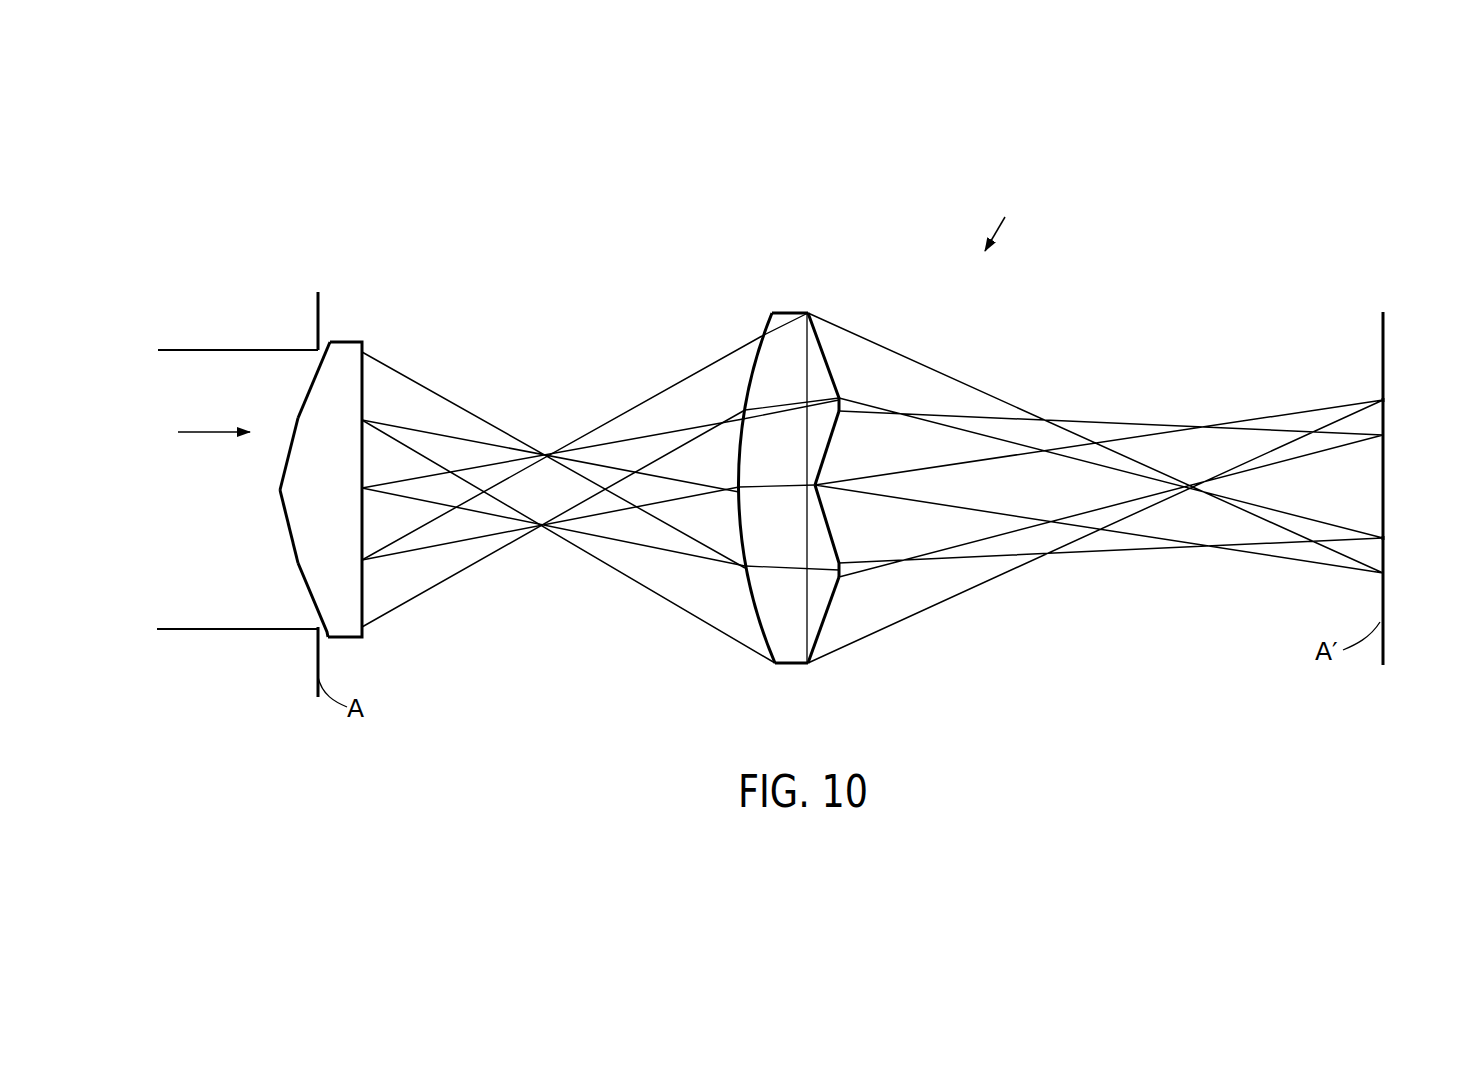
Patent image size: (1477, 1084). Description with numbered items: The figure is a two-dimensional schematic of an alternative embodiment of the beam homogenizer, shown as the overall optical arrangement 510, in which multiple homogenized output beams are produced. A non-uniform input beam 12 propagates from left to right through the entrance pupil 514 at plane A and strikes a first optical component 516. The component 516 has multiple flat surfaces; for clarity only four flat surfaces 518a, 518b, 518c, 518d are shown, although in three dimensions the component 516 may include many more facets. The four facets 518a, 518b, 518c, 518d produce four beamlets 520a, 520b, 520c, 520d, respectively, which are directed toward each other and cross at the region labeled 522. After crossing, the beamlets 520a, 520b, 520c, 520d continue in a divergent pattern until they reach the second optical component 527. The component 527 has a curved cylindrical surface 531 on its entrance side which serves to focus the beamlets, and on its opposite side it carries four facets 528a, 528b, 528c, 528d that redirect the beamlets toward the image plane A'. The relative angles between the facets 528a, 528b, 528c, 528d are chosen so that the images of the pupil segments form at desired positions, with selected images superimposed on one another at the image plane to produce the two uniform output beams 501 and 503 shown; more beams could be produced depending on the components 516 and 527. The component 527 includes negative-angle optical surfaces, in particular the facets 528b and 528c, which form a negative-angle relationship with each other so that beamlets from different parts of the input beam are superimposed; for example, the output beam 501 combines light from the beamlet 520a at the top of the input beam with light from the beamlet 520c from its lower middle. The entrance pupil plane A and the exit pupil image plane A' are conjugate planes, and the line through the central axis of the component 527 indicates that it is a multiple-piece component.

The non-uniform input beam 12 is at (200, 350).
The entrance pupil 514 is at (186, 433).
The optical system 510 is at (1008, 220).
The first optical component 516 is at (280, 477).
The flat surface 518a is at (310, 388).
The flat surface 518b is at (287, 455).
The flat surface 518c is at (287, 527).
The flat surface 518d is at (307, 587).
The beamlet 520a is at (408, 397).
The beamlet 520b is at (398, 467).
The beamlet 520c is at (403, 517).
The beamlet 520d is at (410, 583).
The crossing region 522 is at (569, 384).
The second optical component 527 is at (830, 487).
The curved cylindrical surface 531 is at (748, 368).
The facet 528a is at (832, 607).
The facet 528b is at (827, 537).
The facet 528c is at (830, 440).
The facet 528d is at (832, 362).
The uniform output beam 501 is at (1383, 412).
The uniform output beam 503 is at (1383, 557).